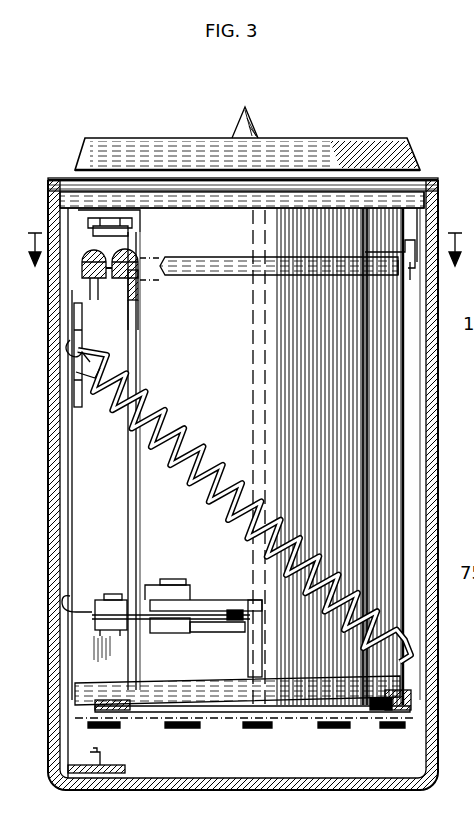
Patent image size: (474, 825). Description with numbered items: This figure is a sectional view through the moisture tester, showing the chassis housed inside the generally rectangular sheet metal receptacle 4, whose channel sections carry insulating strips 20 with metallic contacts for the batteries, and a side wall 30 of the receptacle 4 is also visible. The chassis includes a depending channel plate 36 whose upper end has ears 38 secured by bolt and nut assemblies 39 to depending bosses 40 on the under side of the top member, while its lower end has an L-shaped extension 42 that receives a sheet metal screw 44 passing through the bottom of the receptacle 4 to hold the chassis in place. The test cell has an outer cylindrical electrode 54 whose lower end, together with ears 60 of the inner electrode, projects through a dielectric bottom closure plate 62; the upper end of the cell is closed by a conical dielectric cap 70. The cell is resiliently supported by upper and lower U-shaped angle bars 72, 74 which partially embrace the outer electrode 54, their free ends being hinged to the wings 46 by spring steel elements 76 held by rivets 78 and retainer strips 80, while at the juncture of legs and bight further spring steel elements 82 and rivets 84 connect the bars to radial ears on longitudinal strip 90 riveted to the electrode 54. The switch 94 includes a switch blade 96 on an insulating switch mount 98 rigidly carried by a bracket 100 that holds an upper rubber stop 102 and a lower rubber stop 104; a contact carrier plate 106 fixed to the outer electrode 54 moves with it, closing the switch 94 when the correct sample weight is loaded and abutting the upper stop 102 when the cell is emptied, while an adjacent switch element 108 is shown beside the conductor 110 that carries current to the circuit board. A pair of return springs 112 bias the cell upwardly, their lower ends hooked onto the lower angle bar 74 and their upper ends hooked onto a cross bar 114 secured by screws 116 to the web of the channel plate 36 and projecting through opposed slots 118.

The receptacle 4 is at (252, 805).
The insulating strips 20 is at (274, 154).
The housing wall 30 is at (261, 485).
The channel plate 36 is at (124, 550).
The ears 38 is at (118, 218).
The bolt and nut assemblies 39 is at (104, 224).
The bosses 40 is at (72, 184).
The L-shaped extension 42 is at (64, 782).
The sheet metal screw 44 is at (115, 778).
The wings 46 is at (138, 535).
The outer cylindrical electrode 54 is at (418, 528).
The ears 60 is at (198, 730).
The dielectric bottom closure plate 62 is at (260, 730).
The conical dielectric cap 70 is at (255, 122).
The upper angle bar 72 is at (210, 259).
The lower angle bar 74 is at (300, 712).
The spring steel elements 76 is at (138, 285).
The rivets 78 is at (113, 280).
The retainer strips 80 is at (100, 256).
The spring steel elements 82 is at (373, 243).
The rivets 84 is at (430, 198).
The longitudinal strip 90 is at (350, 445).
The switch 94 is at (204, 582).
The switch blade 96 is at (232, 630).
The insulating switch mount 98 is at (88, 603).
The bracket 100 is at (150, 630).
The upper rubber stop 102 is at (165, 580).
The lower rubber stop 104 is at (200, 633).
The contact carrier plate 106 is at (205, 599).
The hanging bracket 108 is at (260, 604).
The conductor 110 is at (92, 636).
The return springs 112 is at (210, 440).
The cross bar 114 is at (95, 372).
The screws 116 is at (85, 350).
The slots 118 is at (82, 415).